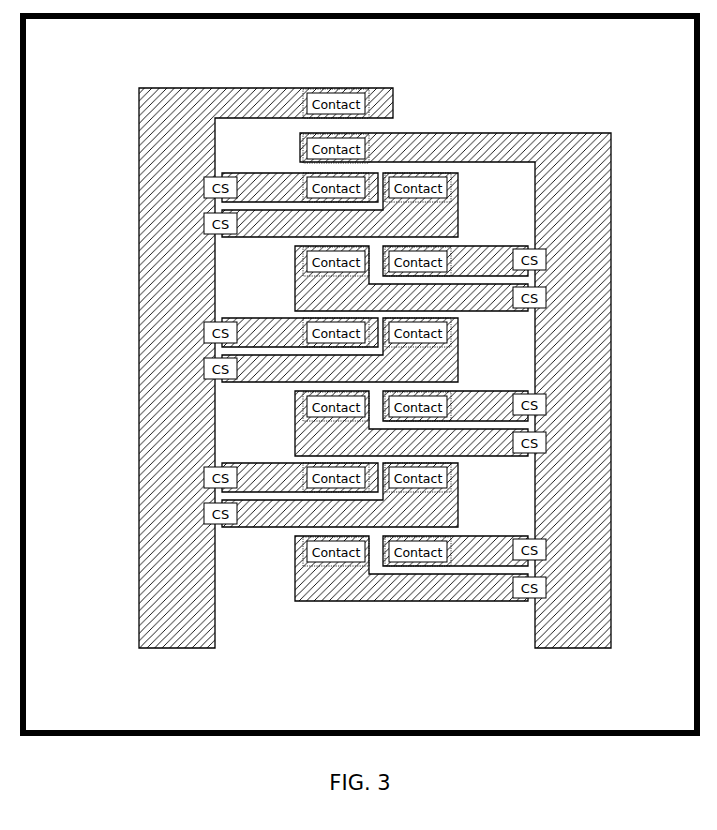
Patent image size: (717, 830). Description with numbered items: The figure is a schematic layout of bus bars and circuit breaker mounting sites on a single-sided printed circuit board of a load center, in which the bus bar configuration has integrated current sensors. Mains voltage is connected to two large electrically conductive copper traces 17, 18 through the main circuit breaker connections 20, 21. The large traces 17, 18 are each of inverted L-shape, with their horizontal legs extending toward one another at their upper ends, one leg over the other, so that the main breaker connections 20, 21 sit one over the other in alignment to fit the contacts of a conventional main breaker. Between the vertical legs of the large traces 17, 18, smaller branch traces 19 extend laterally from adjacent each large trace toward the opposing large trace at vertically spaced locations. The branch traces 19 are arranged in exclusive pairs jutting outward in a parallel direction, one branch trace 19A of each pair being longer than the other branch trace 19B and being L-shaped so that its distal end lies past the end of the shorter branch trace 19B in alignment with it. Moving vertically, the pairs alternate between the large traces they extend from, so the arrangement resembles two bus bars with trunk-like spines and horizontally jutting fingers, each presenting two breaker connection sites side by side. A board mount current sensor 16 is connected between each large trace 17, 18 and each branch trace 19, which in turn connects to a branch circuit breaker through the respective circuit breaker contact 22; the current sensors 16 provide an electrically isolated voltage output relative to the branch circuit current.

The board mount current sensor 16 is at (205, 182).
The large electrically conductive copper trace 17 is at (148, 127).
The large electrically conductive copper trace 18 is at (550, 148).
The branch trace 19 is at (265, 206).
The longer branch trace 19A is at (390, 597).
The shorter branch trace 19B is at (420, 278).
The main circuit breaker connection 20 is at (350, 108).
The main circuit breaker connection 21 is at (362, 147).
The circuit breaker contact 22 is at (335, 192).